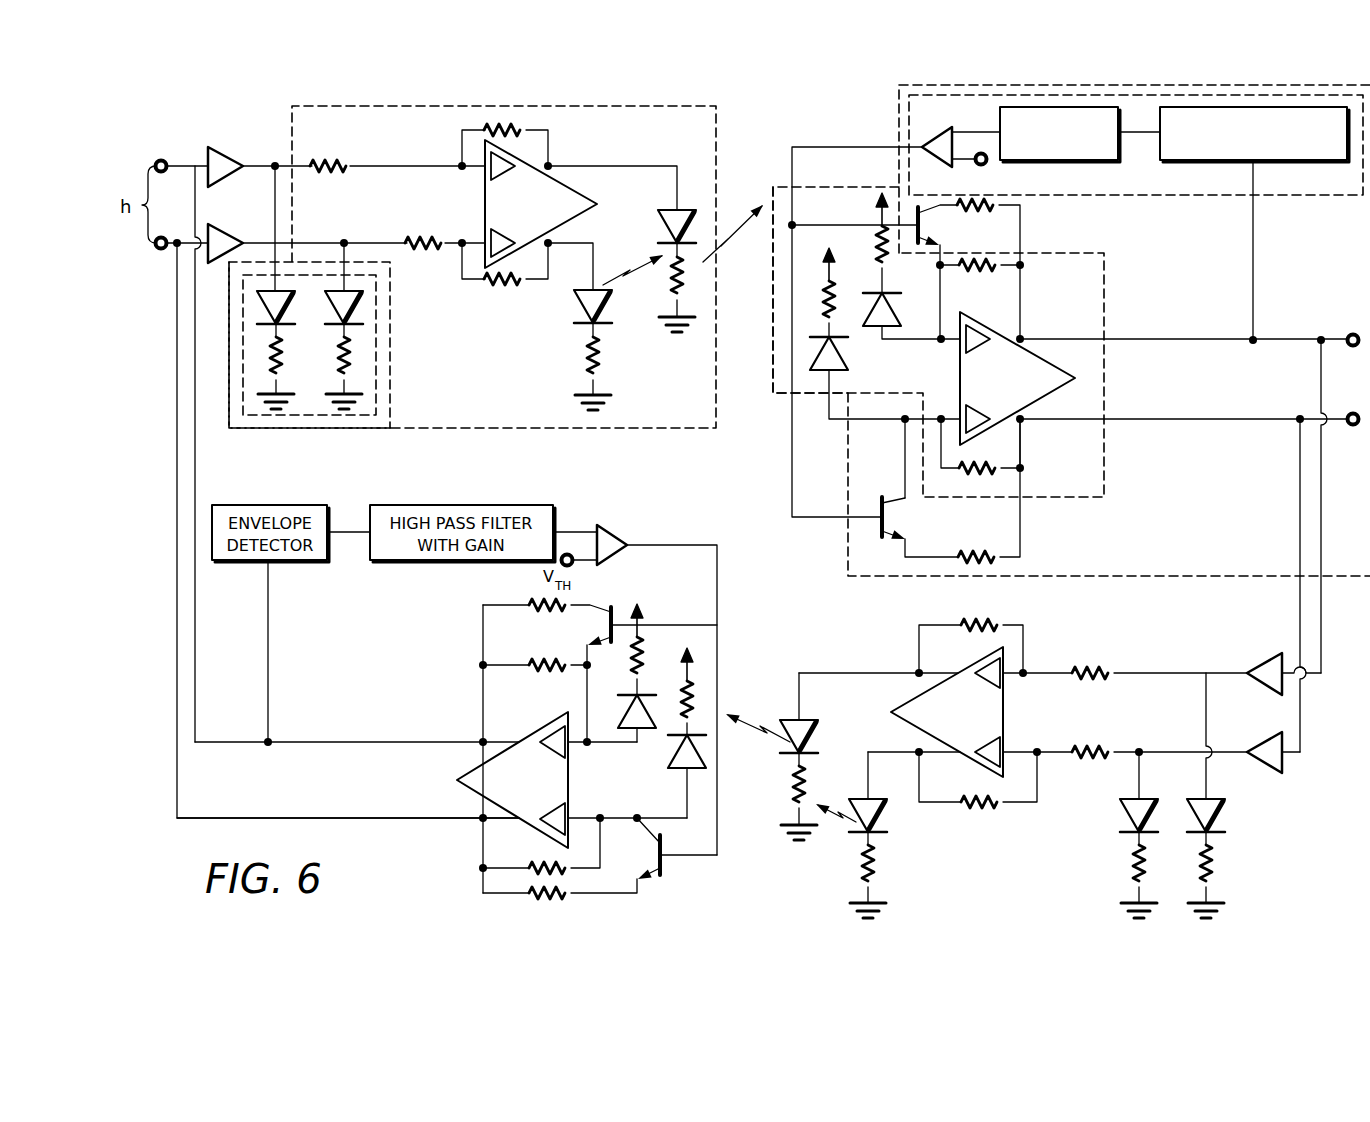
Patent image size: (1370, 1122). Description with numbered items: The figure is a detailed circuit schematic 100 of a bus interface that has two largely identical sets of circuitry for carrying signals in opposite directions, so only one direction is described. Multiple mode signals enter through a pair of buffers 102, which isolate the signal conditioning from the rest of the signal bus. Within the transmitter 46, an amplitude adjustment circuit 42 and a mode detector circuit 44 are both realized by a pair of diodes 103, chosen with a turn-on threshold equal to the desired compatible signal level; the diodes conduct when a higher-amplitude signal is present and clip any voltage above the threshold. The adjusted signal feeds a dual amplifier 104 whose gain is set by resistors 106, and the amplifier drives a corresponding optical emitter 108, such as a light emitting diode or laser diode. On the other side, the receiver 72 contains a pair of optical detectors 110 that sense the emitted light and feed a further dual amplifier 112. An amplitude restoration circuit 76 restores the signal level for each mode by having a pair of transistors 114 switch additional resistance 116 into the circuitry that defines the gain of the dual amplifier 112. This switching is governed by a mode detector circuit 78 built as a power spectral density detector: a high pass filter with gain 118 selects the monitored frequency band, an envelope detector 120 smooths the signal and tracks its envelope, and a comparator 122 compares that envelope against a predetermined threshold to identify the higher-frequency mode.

The amplitude adjustment circuit 42 is at (229, 428).
The mode detector circuit 44 is at (377, 388).
The transmitter 46 is at (299, 104).
The receiver 72 is at (772, 393).
The amplitude restoration circuit 76 is at (1113, 577).
The mode detector circuit 78 is at (1170, 196).
The circuit schematic 100 is at (766, 129).
The buffers 102 is at (229, 152).
The diodes 103 is at (262, 305).
The dual amplifier 104 is at (572, 194).
The resistors 106 is at (333, 160).
The optical emitter 108 is at (658, 226).
The optical detectors 110 is at (891, 303).
The dual amplifier 112 is at (994, 328).
The transistors 114 is at (921, 226).
The additional resistance 116 is at (978, 206).
The high pass filter with gain 118 is at (1312, 164).
The envelope detector 120 is at (1062, 163).
The comparator 122 is at (922, 146).